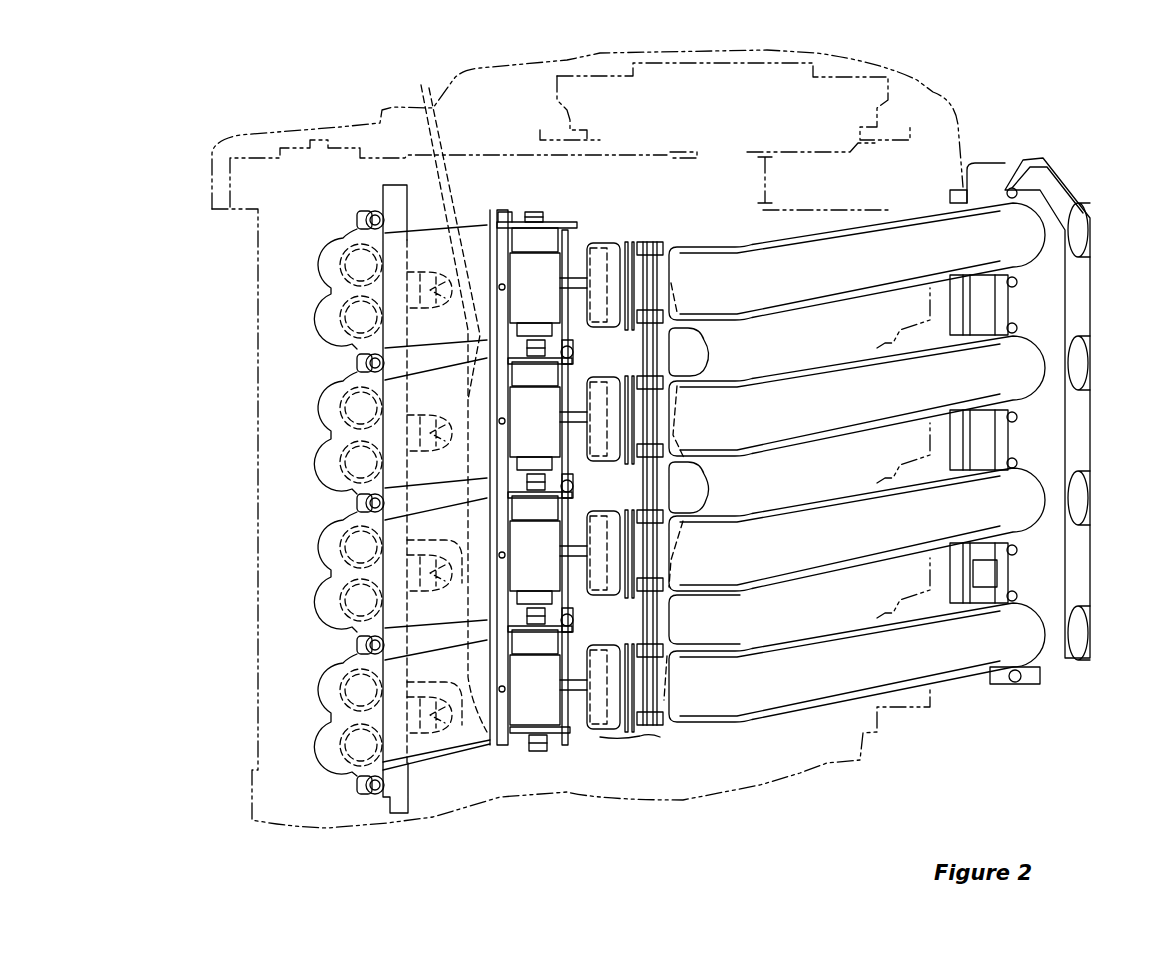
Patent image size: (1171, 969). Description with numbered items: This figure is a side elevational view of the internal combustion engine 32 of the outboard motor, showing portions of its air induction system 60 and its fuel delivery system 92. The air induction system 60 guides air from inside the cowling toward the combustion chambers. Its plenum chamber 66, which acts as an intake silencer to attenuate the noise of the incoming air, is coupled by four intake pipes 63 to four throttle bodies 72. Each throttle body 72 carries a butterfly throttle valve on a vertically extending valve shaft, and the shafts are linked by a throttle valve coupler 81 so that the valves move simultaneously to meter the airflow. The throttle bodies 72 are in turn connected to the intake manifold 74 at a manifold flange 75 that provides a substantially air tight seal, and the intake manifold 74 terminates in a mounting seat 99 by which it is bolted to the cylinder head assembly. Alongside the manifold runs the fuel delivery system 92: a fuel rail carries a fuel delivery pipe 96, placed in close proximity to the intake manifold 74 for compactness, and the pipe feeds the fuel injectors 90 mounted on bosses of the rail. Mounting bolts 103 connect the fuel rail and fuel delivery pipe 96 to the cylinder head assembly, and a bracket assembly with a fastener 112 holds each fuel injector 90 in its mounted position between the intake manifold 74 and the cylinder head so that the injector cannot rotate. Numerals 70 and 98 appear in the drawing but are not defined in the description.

The internal combustion engine 32 is at (920, 728).
The air induction system 60 is at (698, 728).
The intake pipe 63 is at (812, 392).
The plenum chamber 66 is at (1078, 443).
The intake port boss 70 is at (330, 326).
The throttle body 72 is at (540, 402).
The intake manifold 74 is at (477, 743).
The manifold flange 75 is at (493, 733).
The throttle valve coupler 81 is at (575, 352).
The fuel injector 90 is at (240, 697).
The fuel delivery system 92 is at (415, 763).
The fuel delivery pipe 96 is at (400, 817).
The port opening 98 is at (327, 288).
The mounting seat 99 is at (380, 655).
The mounting bolt 103 is at (370, 794).
The fastener 112 is at (367, 782).